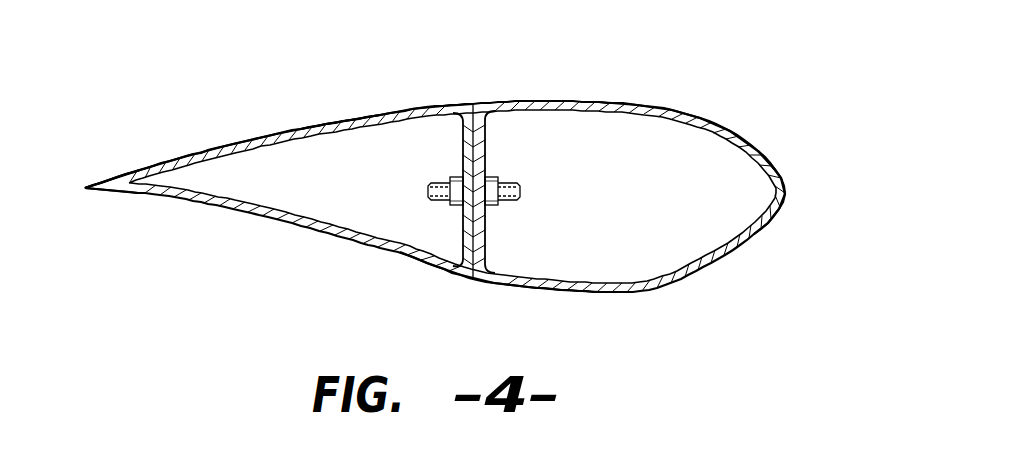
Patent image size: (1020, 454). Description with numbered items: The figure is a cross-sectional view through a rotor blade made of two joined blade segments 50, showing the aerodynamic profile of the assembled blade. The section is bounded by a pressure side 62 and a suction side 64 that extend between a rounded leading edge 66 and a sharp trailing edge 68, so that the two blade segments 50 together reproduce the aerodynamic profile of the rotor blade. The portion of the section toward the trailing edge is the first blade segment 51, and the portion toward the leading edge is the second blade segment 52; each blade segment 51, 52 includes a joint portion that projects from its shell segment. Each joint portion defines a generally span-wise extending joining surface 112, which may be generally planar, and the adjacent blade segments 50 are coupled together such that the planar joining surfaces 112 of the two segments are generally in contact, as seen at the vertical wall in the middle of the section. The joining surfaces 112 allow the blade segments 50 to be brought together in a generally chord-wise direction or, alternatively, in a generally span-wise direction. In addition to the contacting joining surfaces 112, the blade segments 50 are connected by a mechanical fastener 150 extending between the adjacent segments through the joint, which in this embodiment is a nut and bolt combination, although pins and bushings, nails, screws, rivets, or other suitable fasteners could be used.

The blade segment 50 is at (258, 118).
The first blade segment 51 is at (198, 152).
The second blade segment 52 is at (685, 110).
The pressure side 62 is at (510, 287).
The suction side 64 is at (372, 117).
The leading edge 66 is at (787, 188).
The trailing edge 68 is at (83, 188).
The joining surface 112 is at (463, 137).
The mechanical fastener 150 is at (512, 209).